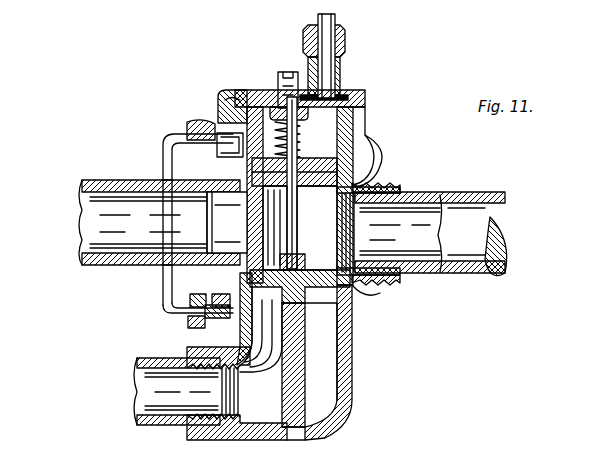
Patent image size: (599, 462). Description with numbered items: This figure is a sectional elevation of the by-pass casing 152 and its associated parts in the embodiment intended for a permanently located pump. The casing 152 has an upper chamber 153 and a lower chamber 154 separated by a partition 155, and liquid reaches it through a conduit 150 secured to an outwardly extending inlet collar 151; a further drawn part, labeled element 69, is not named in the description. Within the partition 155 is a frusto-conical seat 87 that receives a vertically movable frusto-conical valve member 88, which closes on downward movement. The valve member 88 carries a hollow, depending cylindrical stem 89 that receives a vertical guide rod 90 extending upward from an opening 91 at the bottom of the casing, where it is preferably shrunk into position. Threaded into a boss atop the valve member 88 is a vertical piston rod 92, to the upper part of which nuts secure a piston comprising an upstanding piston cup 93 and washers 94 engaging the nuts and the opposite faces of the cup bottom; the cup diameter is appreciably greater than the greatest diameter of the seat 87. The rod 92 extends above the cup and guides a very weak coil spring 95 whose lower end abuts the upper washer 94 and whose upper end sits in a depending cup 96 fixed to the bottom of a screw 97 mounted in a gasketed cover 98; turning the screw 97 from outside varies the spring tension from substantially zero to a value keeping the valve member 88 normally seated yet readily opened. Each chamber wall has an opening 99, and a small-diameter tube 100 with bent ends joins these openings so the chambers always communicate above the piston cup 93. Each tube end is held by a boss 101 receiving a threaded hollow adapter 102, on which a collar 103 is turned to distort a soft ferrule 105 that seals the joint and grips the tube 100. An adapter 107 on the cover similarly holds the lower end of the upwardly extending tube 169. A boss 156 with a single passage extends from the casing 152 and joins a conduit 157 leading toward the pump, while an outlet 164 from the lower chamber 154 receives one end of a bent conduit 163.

The inlet fitting 69 is at (228, 160).
The frusto-conical seat 87 is at (318, 292).
The frusto-conical valve member 88 is at (300, 259).
The cylindrical stem 89 is at (268, 352).
The vertical guide rod 90 is at (294, 400).
The opening 91 is at (300, 441).
The vertical piston rod 92 is at (290, 211).
The piston cup 93 is at (352, 163).
The washers 94 is at (356, 138).
The coil spring 95 is at (298, 135).
The depending cup 96 is at (300, 112).
The screw 97 is at (288, 74).
The cover 98 is at (358, 101).
The opening 99 is at (262, 92).
The tube 100 is at (163, 146).
The bosses 101 is at (216, 336).
The hollow adapter 102 is at (228, 105).
The collar 103 is at (195, 128).
The soft ferrule 105 is at (196, 295).
The adapter 107 is at (341, 52).
The conduit 150 is at (82, 268).
The inlet collar 151 is at (226, 240).
The by-pass casing 152 is at (363, 121).
The upper chamber 153 is at (300, 228).
The lower chamber 154 is at (321, 351).
The partition 155 is at (360, 293).
The boss 156 is at (381, 195).
The conduit 157 is at (478, 216).
The bent conduit 163 is at (137, 364).
The outlet 164 is at (190, 435).
The tube 169 is at (336, 17).